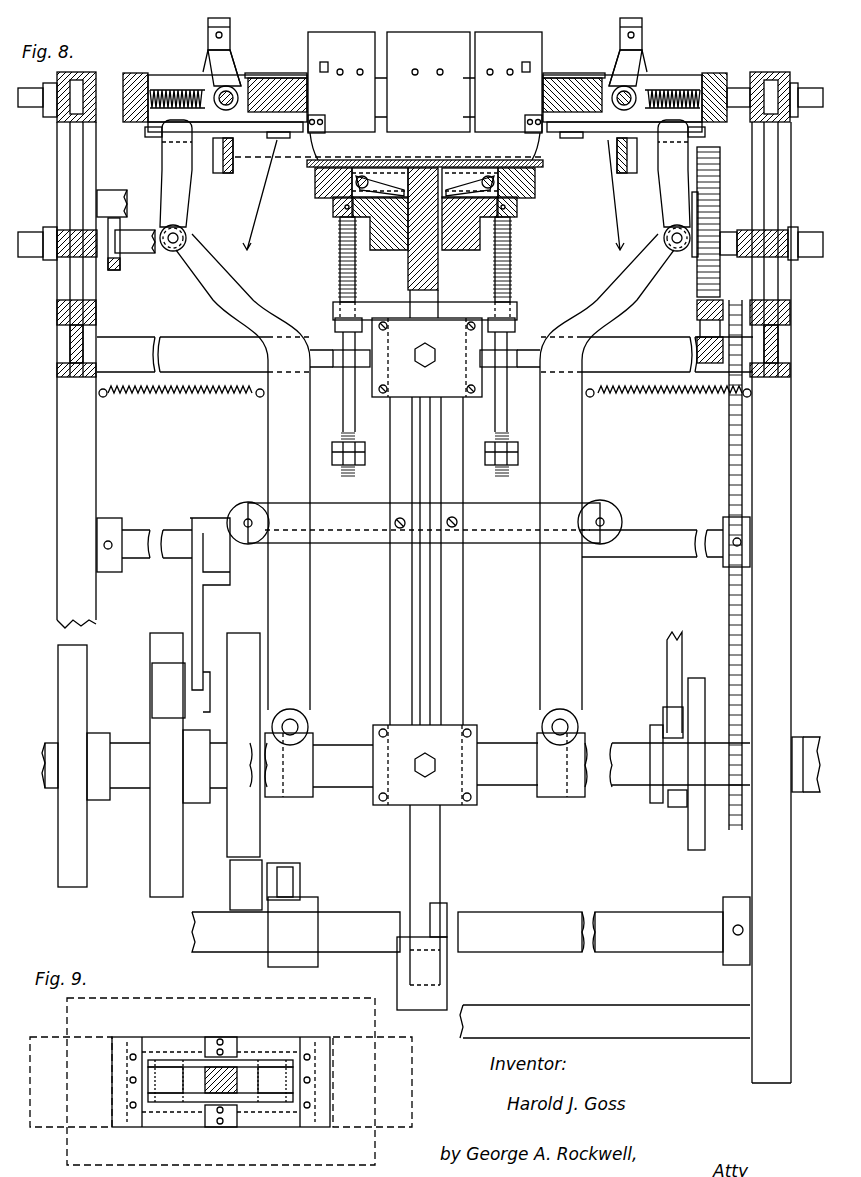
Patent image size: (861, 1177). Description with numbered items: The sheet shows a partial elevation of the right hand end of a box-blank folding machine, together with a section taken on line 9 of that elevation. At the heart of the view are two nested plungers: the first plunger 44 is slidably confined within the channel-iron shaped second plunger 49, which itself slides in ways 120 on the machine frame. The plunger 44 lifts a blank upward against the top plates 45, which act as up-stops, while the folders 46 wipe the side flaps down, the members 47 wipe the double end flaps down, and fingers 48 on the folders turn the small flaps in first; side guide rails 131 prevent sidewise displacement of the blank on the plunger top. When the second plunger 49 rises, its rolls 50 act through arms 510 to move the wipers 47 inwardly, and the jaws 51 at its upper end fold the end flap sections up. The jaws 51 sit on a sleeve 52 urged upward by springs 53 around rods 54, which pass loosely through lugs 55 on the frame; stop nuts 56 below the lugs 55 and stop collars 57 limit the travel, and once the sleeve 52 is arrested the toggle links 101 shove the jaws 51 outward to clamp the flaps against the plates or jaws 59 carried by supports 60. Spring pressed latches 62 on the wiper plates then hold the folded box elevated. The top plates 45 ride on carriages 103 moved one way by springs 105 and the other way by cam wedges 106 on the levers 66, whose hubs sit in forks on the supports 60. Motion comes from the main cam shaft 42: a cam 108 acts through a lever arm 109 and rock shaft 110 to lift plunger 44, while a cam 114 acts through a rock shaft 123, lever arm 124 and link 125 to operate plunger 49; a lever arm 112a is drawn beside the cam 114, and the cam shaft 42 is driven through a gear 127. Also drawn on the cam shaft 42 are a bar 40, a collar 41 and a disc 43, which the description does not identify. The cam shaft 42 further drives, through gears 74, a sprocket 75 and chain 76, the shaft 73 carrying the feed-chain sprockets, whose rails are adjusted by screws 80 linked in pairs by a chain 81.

The section line 9 is at (433, 205).
The pawl bar 40 is at (667, 668).
The collar 41 is at (650, 800).
The main cam shaft 42 is at (345, 744).
The disc 43 is at (697, 850).
The plunger 44 is at (443, 660).
The plates 45 is at (308, 76).
The folders 46 is at (425, 96).
The members 47 is at (278, 134).
The fingers 48 is at (296, 136).
The second plunger 49 is at (406, 282).
The rolls 50 is at (248, 502).
The jaws 51 is at (338, 182).
The sleeve 52 is at (500, 212).
The springs 53 is at (340, 276).
The rods 54 is at (343, 414).
The lugs 55 is at (333, 357).
The stop nuts 56 is at (362, 462).
The stop collars 57 is at (334, 322).
The plates or jaws 59 is at (307, 100).
The supports 60 is at (163, 67).
The spring pressed latches 62 is at (340, 57).
The levers 66 is at (208, 26).
The shaft 73 is at (160, 192).
The gears 74 is at (712, 156).
The sprocket 75 is at (698, 310).
The chain 76 is at (728, 441).
The screws 80 is at (140, 250).
The chain 81 is at (121, 271).
The toggle links 101 is at (336, 210).
The carriages 103 is at (240, 90).
The springs 105 is at (425, 90).
The cam wedges 106 is at (233, 52).
The cam 108 is at (165, 623).
The lever arm 109 is at (203, 594).
The rock shaft 110 is at (168, 532).
The block 112a is at (300, 878).
The cam 114 is at (261, 822).
The ways 120 is at (427, 561).
The rock shaft 123 is at (296, 932).
The lever arm 124 is at (447, 973).
The link 125 is at (397, 973).
The gear 127 is at (78, 887).
The side guide rails 131 is at (222, 174).
The arms 510 is at (425, 472).